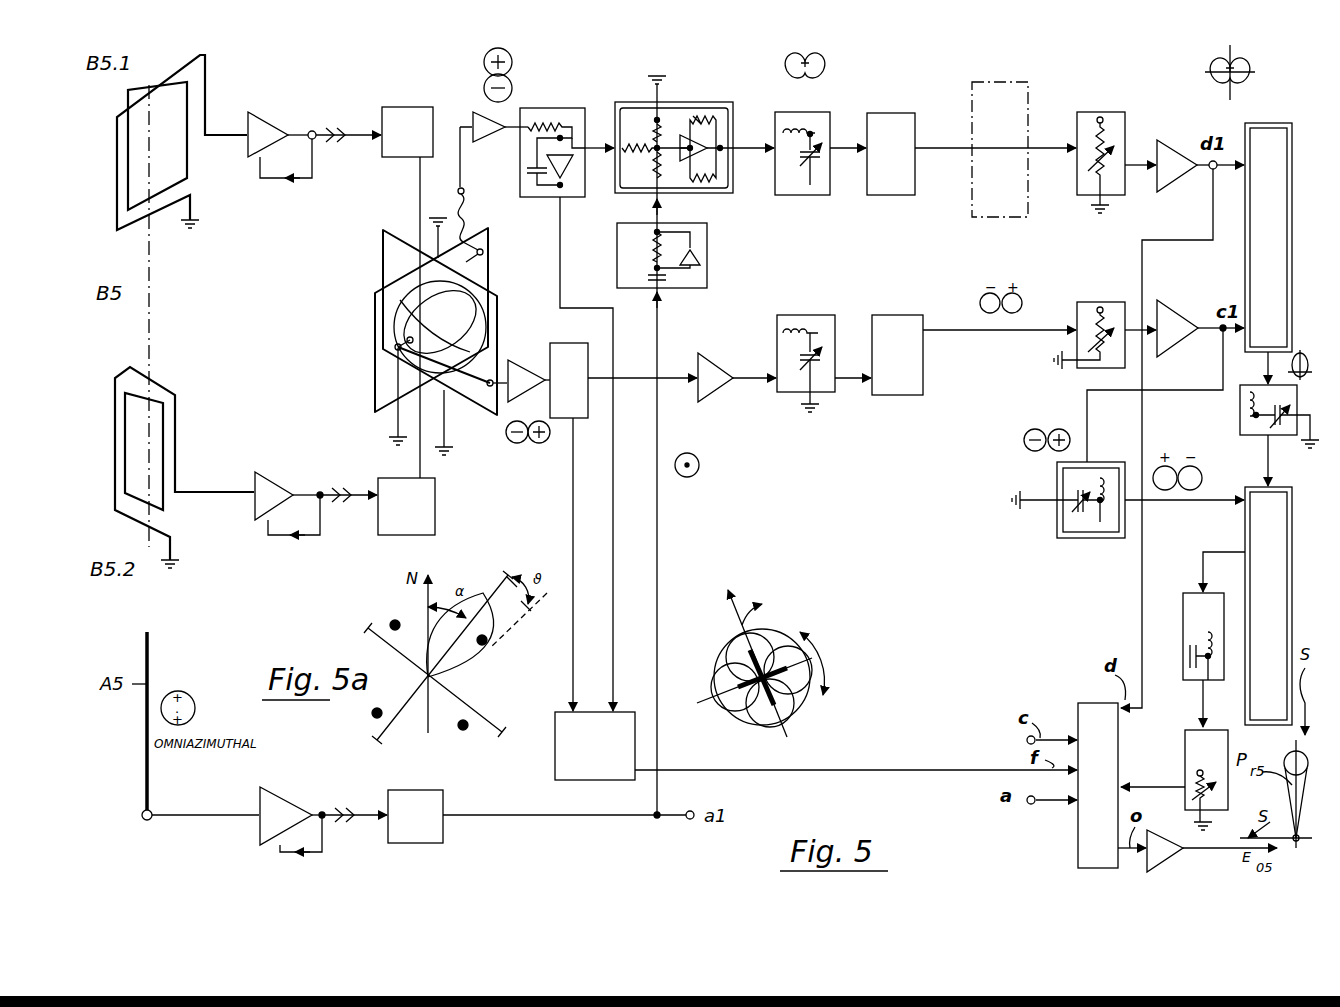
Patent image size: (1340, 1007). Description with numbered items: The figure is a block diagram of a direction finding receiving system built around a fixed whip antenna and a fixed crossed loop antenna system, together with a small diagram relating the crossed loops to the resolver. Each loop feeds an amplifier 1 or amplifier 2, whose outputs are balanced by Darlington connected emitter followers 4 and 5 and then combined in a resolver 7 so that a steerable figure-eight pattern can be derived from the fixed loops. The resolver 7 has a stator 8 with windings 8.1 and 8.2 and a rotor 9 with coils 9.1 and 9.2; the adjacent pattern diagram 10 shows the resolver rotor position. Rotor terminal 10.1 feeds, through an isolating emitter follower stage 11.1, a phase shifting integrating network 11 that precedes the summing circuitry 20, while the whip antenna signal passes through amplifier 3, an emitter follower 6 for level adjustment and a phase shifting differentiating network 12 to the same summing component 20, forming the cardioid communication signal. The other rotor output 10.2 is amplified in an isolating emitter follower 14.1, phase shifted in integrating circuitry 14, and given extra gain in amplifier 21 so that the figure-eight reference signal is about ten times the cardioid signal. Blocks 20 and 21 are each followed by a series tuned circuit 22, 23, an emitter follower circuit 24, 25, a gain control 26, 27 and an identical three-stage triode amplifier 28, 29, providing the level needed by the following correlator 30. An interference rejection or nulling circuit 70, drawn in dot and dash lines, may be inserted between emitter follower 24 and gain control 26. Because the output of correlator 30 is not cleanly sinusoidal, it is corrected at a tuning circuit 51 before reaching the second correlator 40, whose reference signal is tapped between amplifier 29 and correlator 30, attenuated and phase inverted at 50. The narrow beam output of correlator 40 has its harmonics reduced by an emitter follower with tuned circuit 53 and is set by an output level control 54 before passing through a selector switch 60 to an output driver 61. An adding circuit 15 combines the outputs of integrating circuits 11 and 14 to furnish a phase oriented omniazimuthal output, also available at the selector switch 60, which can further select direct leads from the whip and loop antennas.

In FIG. 5, the amplifier 1 is at (282, 107).
In FIG. 5, the amplifier 2 is at (285, 483).
In FIG. 5, the amplifier 3 is at (300, 808).
In FIG. 5, the emitter follower 4 is at (408, 107).
In FIG. 5, the emitter follower 5 is at (435, 512).
In FIG. 5, the emitter follower 6 is at (443, 835).
In FIG. 5, the resolver 7 is at (421, 327).
In FIG. 5, the stator 8 is at (409, 320).
In FIG. 5A, the stator 8 is at (476, 736).
In FIG. 5, the stator winding 8.1 is at (374, 296).
In FIG. 5, the stator winding 8.2 is at (381, 231).
In FIG. 5, the rotor 9 is at (468, 319).
In FIG. 5A, the rotor 9 is at (465, 700).
In FIG. 5, the rotor coil 9.1 is at (487, 283).
In FIG. 5, the rotor coil 9.2 is at (462, 330).
In FIG. 5, the rotor 10 is at (716, 668).
In FIG. 5, the resolver rotor terminal 10.1 is at (486, 258).
In FIG. 5, the resolver rotor output 10.2 is at (490, 390).
In FIG. 5, the phase shifting integrating network 11 is at (545, 139).
In FIG. 5, the isolating emitter follower stage 11.1 is at (486, 140).
In FIG. 5, the phase shifting differentiating network 12 is at (707, 276).
In FIG. 5, the integrating circuitry 14 is at (578, 343).
In FIG. 5, the isolating emitter follower 14.1 is at (535, 345).
In FIG. 5, the adding circuit 15 is at (555, 780).
In FIG. 5, the summing circuitry 20 is at (728, 90).
In FIG. 5, the amplifier 21 is at (738, 350).
In FIG. 5, the series tuned circuit 22 is at (805, 196).
In FIG. 5, the series tuned circuit 23 is at (828, 306).
In FIG. 5, the emitter follower circuit 24 is at (911, 100).
In FIG. 5, the emitter follower circuit 25 is at (918, 305).
In FIG. 5, the gain control 26 is at (1122, 100).
In FIG. 5, the gain control 27 is at (1115, 301).
In FIG. 5, the amplifier 28 is at (1180, 148).
In FIG. 5, the amplifier 29 is at (1190, 312).
In FIG. 5, the correlator 30 is at (1305, 112).
In FIG. 5, the second correlator 40 is at (1248, 490).
In FIG. 5, the reference signal attenuating and phase inverting circuit 50 is at (1100, 539).
In FIG. 5, the tuning circuit with emitter followers 51 is at (1238, 419).
In FIG. 5, the emitter follower with tuned circuit 53 is at (1200, 616).
In FIG. 5, the output level control 54 is at (1183, 760).
In FIG. 5, the selector switch 60 is at (1082, 712).
In FIG. 5, the output driver 61 is at (1168, 852).
In FIG. 5, the interference rejection or nulling circuit 70 is at (1010, 82).